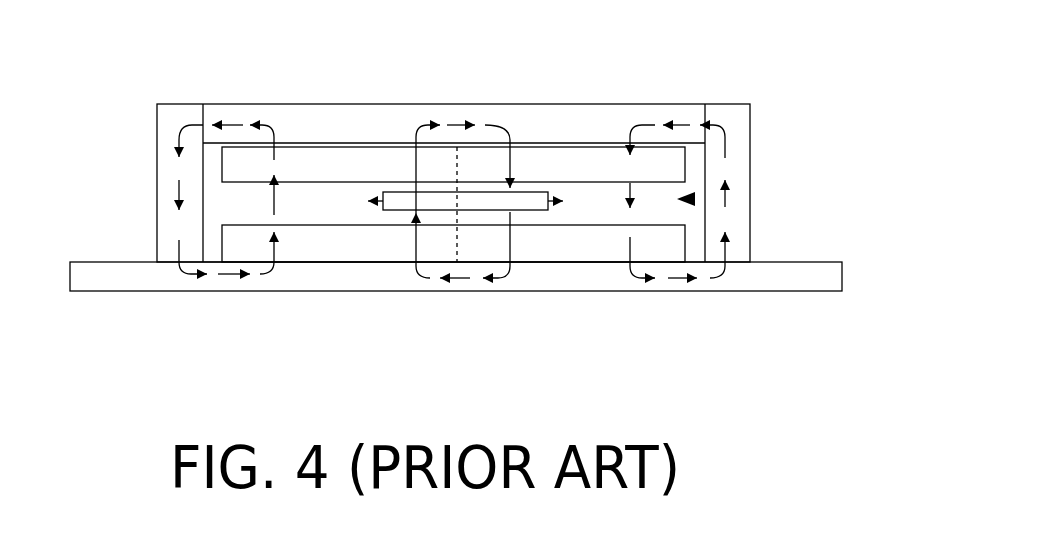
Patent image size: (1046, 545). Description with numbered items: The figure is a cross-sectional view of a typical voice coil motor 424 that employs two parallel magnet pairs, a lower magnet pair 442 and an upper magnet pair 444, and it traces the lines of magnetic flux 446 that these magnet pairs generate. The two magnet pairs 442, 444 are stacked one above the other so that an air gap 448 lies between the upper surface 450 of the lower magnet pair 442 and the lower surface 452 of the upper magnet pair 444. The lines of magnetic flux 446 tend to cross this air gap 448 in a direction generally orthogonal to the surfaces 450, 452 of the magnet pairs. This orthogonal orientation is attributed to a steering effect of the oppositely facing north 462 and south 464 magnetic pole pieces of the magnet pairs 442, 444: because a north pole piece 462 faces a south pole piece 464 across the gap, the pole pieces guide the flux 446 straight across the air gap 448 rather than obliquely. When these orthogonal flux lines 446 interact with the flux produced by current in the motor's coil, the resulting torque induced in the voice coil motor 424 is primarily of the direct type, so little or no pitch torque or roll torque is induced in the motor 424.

The voice coil motor 424 is at (832, 324).
The lower magnet pair 442 is at (407, 122).
The upper magnet pair 444 is at (287, 280).
The lines of magnetic flux 446 is at (180, 128).
The air gap 448 is at (692, 198).
The upper surface of the lower magnet pair 450 is at (593, 218).
The lower surface of the upper magnet pair 452 is at (282, 189).
The north facing magnetic pole piece 462 is at (333, 183).
The south facing magnetic pole piece 464 is at (562, 180).